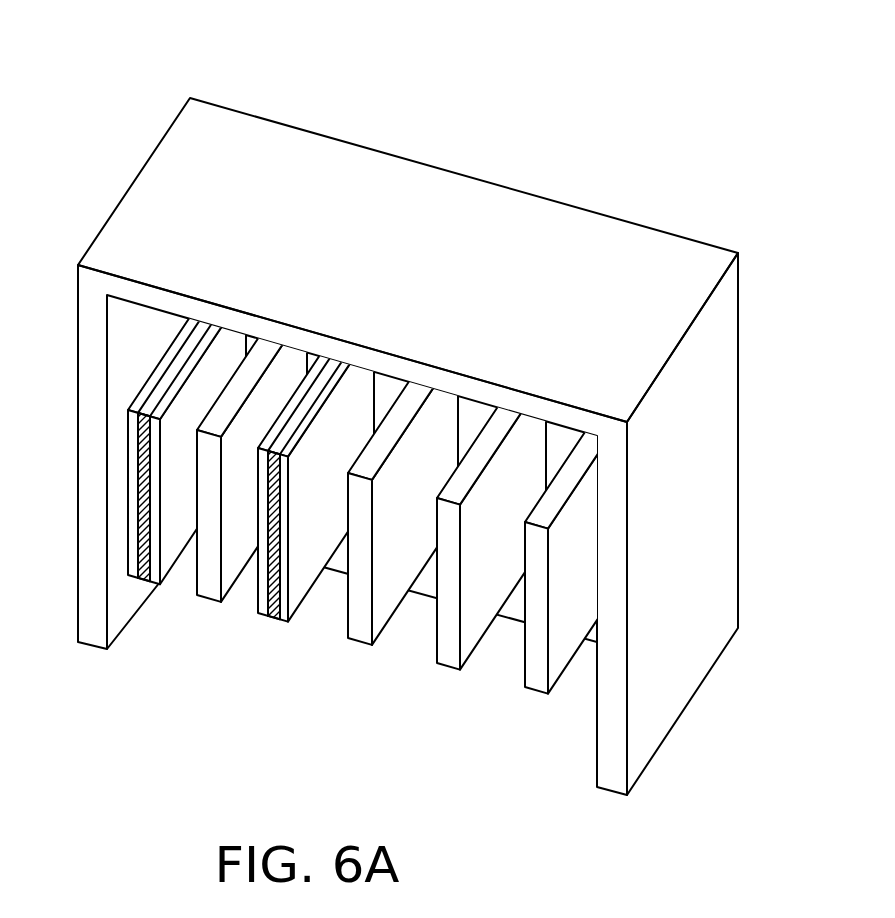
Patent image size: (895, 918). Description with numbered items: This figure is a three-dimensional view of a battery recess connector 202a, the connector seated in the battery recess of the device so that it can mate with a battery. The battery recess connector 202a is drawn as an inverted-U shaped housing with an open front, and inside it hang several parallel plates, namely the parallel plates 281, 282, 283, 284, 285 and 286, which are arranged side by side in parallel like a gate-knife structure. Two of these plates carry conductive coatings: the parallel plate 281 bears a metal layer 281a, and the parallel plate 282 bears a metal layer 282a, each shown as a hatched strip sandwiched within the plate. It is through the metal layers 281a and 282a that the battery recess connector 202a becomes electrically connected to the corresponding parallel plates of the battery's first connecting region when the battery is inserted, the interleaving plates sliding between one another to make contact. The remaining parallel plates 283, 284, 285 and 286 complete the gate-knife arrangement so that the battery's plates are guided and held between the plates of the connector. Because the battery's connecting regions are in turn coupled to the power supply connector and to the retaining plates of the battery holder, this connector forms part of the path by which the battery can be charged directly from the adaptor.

The battery recess connector 202a is at (815, 213).
The parallel plate 281 is at (130, 582).
The metal layer 281a is at (153, 542).
The parallel plate 282 is at (271, 619).
The metal layer 282a is at (283, 593).
The parallel plate 283 is at (545, 694).
The parallel plate 284 is at (262, 357).
The parallel plate 285 is at (413, 398).
The parallel plate 286 is at (503, 423).